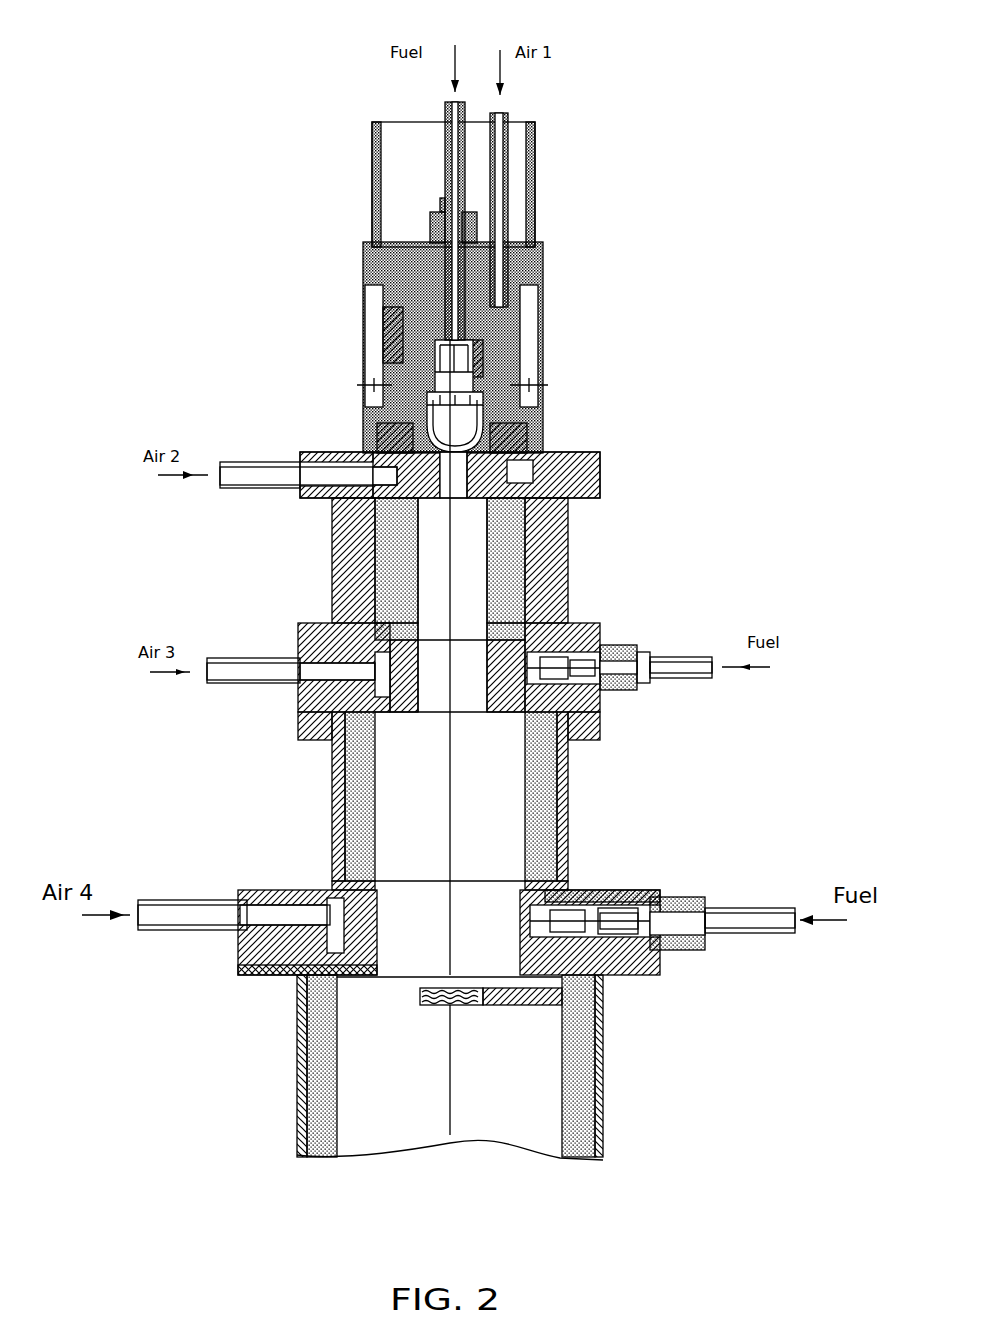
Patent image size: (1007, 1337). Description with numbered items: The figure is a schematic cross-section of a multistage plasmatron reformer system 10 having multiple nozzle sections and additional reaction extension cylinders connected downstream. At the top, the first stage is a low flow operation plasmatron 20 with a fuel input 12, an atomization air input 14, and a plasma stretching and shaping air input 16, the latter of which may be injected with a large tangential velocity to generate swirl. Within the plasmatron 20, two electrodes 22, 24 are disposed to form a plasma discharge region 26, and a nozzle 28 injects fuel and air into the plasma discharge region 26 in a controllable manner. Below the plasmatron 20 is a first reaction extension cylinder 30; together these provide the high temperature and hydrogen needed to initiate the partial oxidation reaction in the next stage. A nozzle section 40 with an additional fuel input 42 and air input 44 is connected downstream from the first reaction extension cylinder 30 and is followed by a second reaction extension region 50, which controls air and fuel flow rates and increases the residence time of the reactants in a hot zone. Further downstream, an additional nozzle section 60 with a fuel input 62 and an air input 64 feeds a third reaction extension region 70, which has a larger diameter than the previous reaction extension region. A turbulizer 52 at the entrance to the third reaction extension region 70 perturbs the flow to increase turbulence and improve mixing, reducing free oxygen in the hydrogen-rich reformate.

The multistage plasmatron reformer system 10 is at (205, 186).
The fuel input 12 is at (443, 112).
The atomization air input 14 is at (510, 118).
The plasma stretching and shaping air input 16 is at (243, 488).
The low flow operation plasmatron 20 is at (522, 343).
The electrode 22 is at (405, 425).
The electrode 24 is at (392, 458).
The plasma discharge region 26 is at (527, 453).
The nozzle 28 is at (390, 377).
The first reaction extension cylinder 30 is at (467, 592).
The nozzle section 40 is at (578, 632).
The fuel input 42 is at (687, 677).
The air input 44 is at (243, 685).
The second reaction extension region 50 is at (487, 832).
The turbulizer 52 is at (420, 1005).
The additional nozzle section 60 is at (615, 892).
The fuel input 62 is at (755, 928).
The air input 64 is at (188, 930).
The third reaction extension region 70 is at (507, 1087).